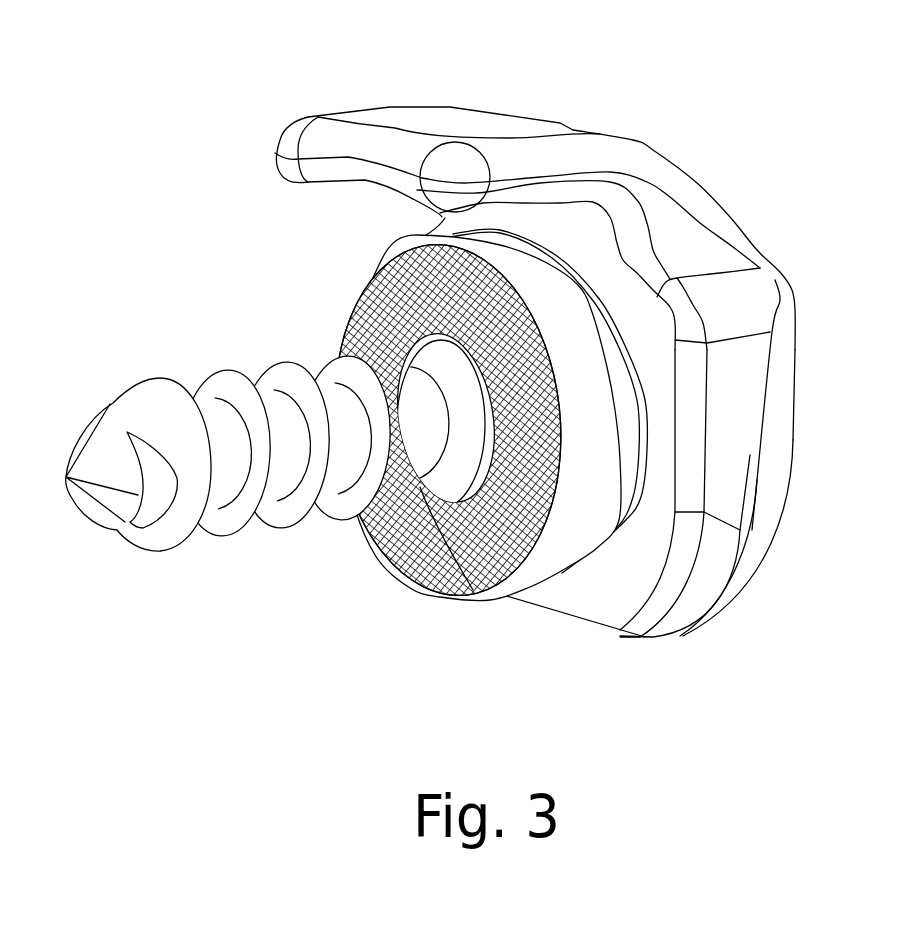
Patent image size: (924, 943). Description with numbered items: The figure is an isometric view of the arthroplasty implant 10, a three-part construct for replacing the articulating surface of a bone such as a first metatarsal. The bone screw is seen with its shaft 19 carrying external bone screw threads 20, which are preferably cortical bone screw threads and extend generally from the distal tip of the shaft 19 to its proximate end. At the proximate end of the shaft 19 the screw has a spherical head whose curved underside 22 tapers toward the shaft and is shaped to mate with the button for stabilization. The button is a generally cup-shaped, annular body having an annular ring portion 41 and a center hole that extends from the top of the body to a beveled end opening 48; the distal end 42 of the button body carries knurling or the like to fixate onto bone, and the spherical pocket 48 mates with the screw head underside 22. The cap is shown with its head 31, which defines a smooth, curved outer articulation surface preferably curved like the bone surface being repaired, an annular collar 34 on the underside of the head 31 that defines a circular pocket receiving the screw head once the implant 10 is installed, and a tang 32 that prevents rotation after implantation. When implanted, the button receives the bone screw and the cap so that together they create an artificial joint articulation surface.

The arthroplasty implant 10 is at (815, 119).
The shaft 19 is at (250, 488).
The bone screw threads 20 is at (275, 454).
The curved underside of head 22 is at (441, 443).
The head 31 is at (557, 349).
The tang 32 is at (389, 130).
The annular collar 34 is at (620, 513).
The annular ring portion 41 is at (557, 583).
The distal end of button body 42 is at (387, 542).
The beveled end opening 48 is at (474, 576).